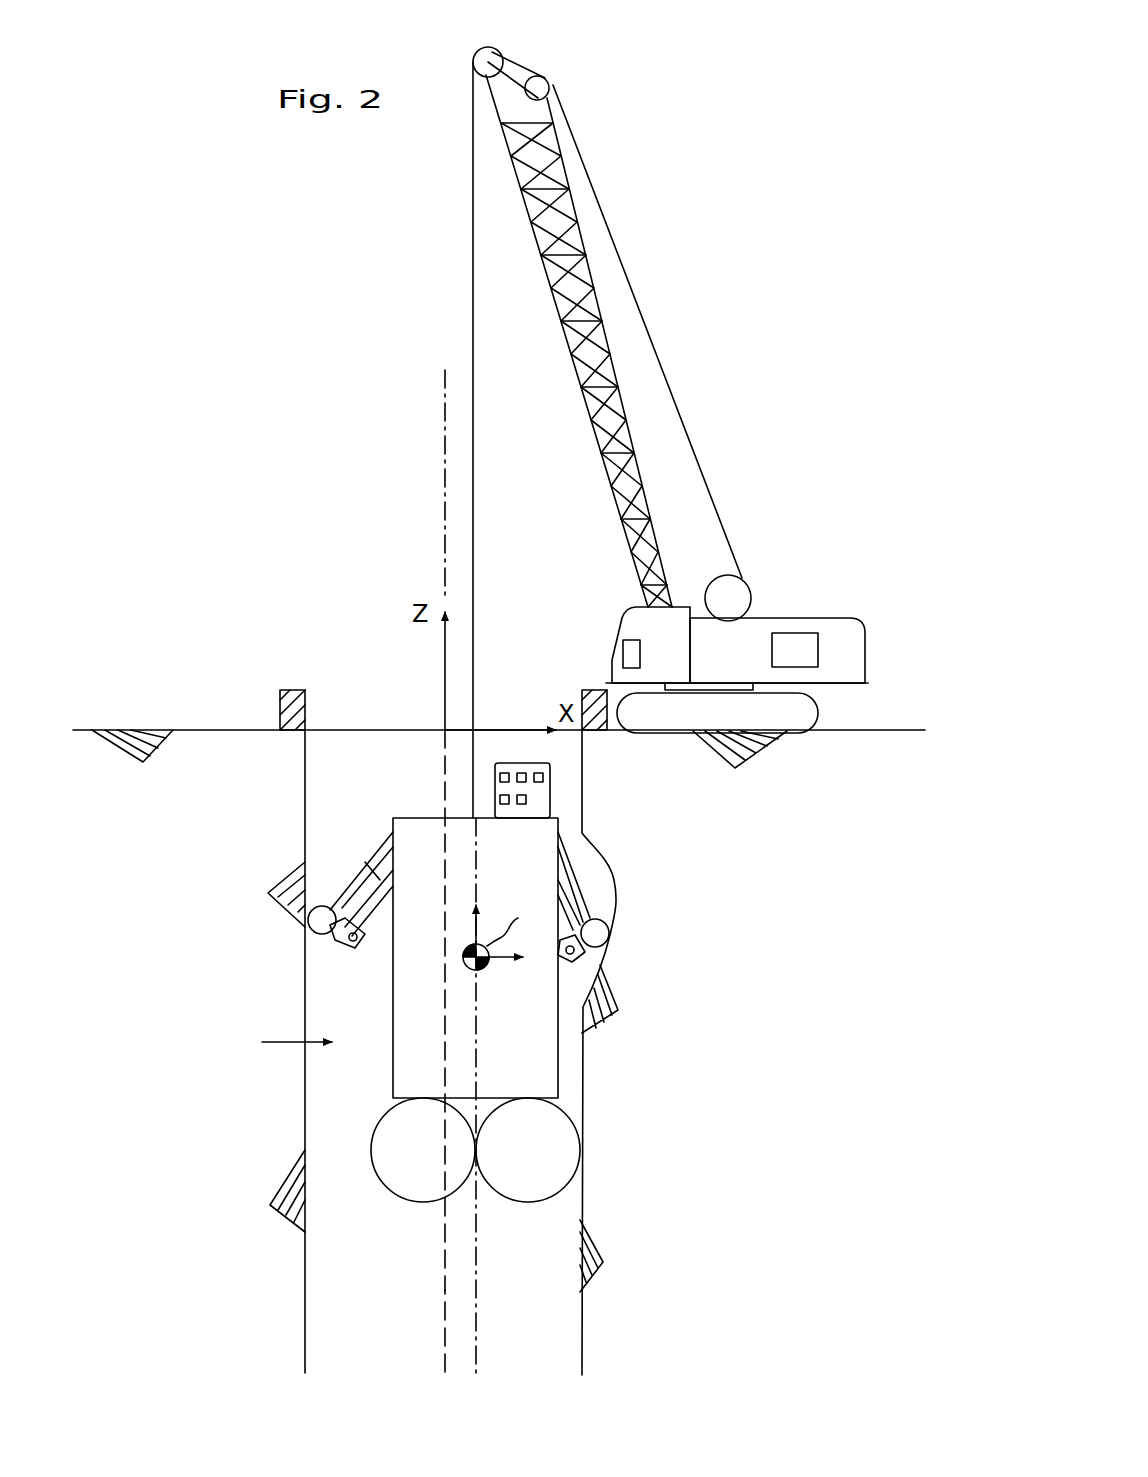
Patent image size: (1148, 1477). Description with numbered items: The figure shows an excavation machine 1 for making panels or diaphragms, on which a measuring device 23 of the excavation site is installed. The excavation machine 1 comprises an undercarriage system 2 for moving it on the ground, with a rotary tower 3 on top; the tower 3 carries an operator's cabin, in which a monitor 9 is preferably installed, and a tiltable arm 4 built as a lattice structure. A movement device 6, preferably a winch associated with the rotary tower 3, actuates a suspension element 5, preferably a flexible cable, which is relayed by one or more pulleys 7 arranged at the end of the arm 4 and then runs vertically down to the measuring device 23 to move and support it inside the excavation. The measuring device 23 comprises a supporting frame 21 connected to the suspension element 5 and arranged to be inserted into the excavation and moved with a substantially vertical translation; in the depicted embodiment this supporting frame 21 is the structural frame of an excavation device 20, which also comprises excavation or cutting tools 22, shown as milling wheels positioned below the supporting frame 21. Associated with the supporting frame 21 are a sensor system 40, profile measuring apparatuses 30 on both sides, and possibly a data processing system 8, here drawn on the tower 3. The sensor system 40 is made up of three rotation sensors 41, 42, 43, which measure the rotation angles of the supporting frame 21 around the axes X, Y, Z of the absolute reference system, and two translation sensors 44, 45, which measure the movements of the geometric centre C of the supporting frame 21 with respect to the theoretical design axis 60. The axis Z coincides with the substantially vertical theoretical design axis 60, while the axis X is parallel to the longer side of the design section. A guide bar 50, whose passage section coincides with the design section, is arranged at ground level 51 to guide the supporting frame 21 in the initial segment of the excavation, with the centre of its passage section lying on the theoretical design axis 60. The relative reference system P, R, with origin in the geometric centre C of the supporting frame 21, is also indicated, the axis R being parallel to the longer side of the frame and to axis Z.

The excavation machine 1 is at (732, 343).
The undercarriage system 2 is at (818, 713).
The rotary tower 3 is at (842, 618).
The tiltable arm 4 is at (576, 372).
The suspension element 5 is at (702, 464).
The movement device 6 is at (730, 602).
The pulleys 7 is at (496, 50).
The data processing system 8 is at (797, 640).
The monitor 9 is at (628, 652).
The excavation device 20 is at (372, 1087).
The supporting frame 21 is at (393, 998).
The excavation or cutting tools 22 is at (396, 1194).
The measuring device 23 is at (281, 1043).
The profile measuring apparatus 30 is at (358, 856).
The sensor system 40 is at (554, 764).
The rotation sensor 41 is at (502, 772).
The rotation sensor 42 is at (521, 772).
The rotation sensor 43 is at (540, 772).
The translation sensor 44 is at (528, 802).
The translation sensor 45 is at (503, 806).
The guide bar 50 is at (280, 690).
The ground level 51 is at (166, 730).
The theoretical design axis 60 is at (444, 1290).